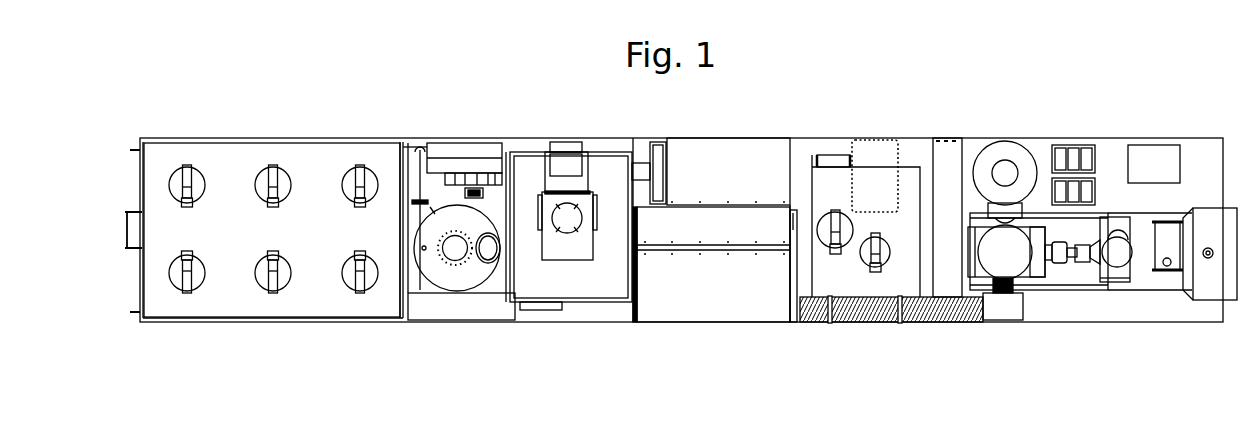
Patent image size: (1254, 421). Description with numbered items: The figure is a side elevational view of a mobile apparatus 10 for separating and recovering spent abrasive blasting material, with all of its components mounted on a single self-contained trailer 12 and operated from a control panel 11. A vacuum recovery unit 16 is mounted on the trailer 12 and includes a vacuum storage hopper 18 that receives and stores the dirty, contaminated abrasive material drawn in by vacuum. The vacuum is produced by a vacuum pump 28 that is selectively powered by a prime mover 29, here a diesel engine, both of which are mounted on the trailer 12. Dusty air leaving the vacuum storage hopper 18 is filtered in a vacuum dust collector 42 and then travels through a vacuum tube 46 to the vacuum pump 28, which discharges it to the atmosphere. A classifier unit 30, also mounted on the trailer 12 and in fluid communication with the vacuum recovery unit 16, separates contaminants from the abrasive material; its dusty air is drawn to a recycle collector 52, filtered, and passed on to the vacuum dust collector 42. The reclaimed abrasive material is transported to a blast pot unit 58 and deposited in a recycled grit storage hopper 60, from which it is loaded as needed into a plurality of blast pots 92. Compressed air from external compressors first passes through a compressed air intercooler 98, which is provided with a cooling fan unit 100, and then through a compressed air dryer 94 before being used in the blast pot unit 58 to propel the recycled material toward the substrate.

The apparatus 10 is at (810, 122).
The control panel 11 is at (494, 308).
The trailer 12 is at (1164, 326).
The vacuum recovery unit 16 is at (915, 155).
The vacuum storage hopper 18 is at (847, 283).
The vacuum pump 28 is at (1007, 262).
The prime mover 29 is at (1130, 225).
The classifier unit 30 is at (597, 312).
The vacuum dust collector 42 is at (716, 310).
The vacuum tube 46 is at (887, 322).
The recycle collector 52 is at (717, 150).
The blast pot unit 58 is at (219, 130).
The recycled grit storage hopper 60 is at (224, 300).
The blast pots 92 is at (178, 168).
The compressed air dryer 94 is at (447, 278).
The compressed air intercooler 98 is at (443, 152).
The cooling fan unit 100 is at (496, 178).